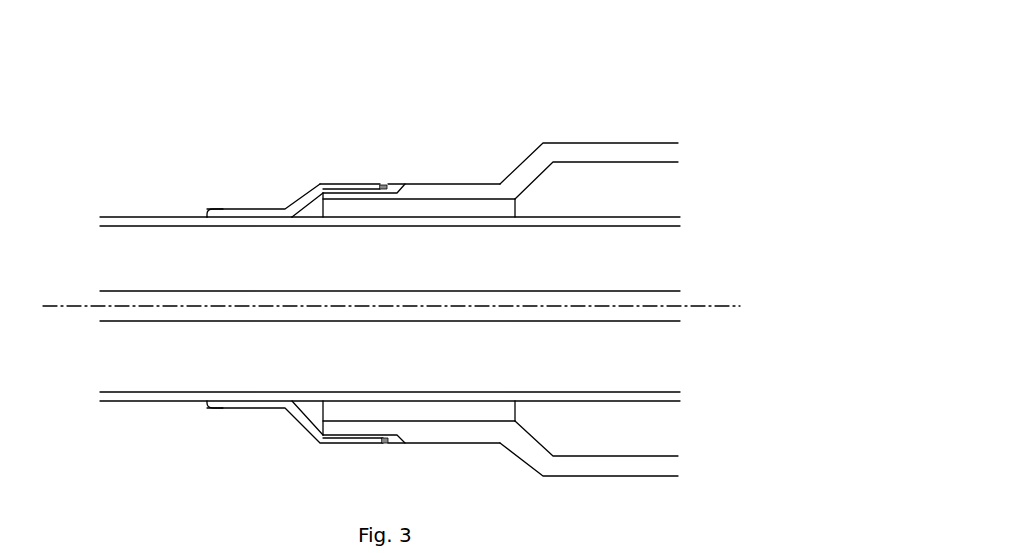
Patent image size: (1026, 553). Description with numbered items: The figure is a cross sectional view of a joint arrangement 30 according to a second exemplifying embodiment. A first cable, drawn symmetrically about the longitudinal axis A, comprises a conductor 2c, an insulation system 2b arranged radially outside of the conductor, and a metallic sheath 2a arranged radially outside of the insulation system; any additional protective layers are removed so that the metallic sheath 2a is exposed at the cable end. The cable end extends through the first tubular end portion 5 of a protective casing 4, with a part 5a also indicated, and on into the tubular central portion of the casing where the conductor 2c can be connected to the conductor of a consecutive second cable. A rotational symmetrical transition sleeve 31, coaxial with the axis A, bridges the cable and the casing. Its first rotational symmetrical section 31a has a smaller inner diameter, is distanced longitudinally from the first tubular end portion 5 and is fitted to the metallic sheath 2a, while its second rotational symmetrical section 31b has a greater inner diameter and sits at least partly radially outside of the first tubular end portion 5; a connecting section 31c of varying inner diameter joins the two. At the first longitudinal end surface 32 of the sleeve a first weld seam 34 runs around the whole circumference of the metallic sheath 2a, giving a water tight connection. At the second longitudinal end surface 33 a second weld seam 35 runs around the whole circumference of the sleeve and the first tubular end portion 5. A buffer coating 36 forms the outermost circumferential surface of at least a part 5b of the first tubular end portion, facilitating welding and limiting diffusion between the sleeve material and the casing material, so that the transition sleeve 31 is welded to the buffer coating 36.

The joint arrangement 30 is at (481, 83).
The metallic sheath 2a is at (138, 217).
The insulation system 2b is at (170, 236).
The conductor 2c is at (168, 302).
The protective casing 4 is at (620, 146).
The first tubular end portion 5 is at (463, 192).
The sheath distal end 5a is at (308, 427).
The part of the first tubular end portion 5b is at (348, 195).
The transition sleeve 31 is at (302, 203).
The first rotational symmetrical section 31a is at (257, 217).
The second rotational symmetrical section 31b is at (352, 185).
The connecting section 31c is at (307, 207).
The first longitudinal end surface 32 is at (225, 210).
The second longitudinal end surface 33 is at (378, 188).
The first weld seam 34 is at (205, 213).
The second weld seam 35 is at (385, 188).
The buffer coating 36 is at (377, 192).
The longitudinal axis A is at (80, 304).